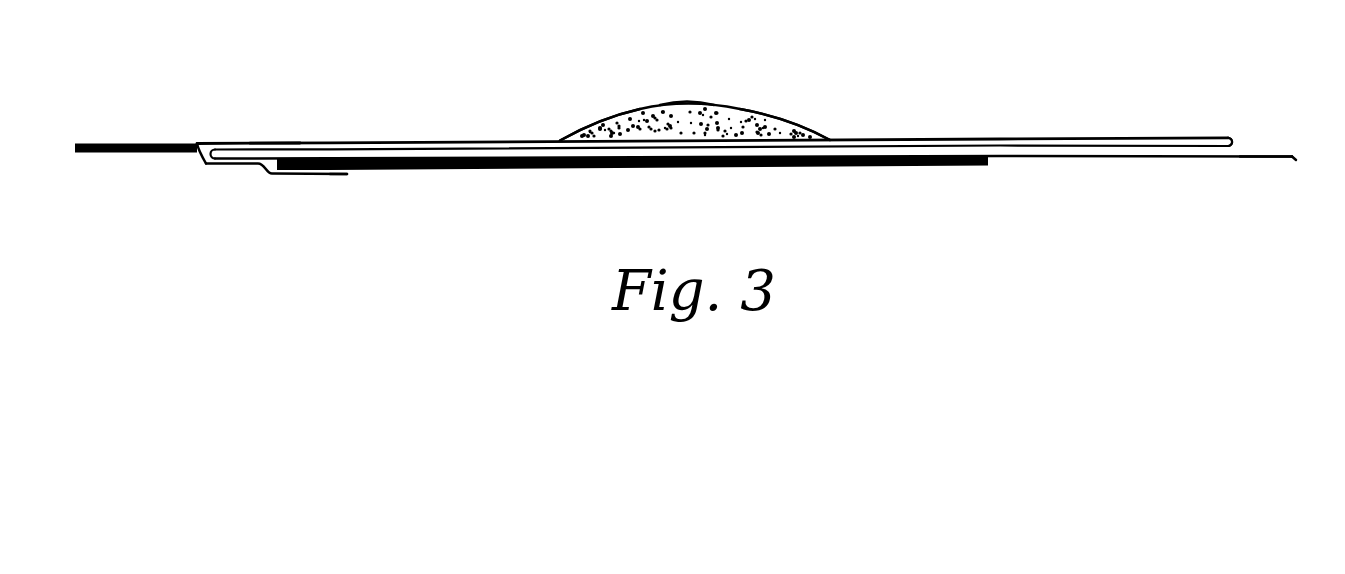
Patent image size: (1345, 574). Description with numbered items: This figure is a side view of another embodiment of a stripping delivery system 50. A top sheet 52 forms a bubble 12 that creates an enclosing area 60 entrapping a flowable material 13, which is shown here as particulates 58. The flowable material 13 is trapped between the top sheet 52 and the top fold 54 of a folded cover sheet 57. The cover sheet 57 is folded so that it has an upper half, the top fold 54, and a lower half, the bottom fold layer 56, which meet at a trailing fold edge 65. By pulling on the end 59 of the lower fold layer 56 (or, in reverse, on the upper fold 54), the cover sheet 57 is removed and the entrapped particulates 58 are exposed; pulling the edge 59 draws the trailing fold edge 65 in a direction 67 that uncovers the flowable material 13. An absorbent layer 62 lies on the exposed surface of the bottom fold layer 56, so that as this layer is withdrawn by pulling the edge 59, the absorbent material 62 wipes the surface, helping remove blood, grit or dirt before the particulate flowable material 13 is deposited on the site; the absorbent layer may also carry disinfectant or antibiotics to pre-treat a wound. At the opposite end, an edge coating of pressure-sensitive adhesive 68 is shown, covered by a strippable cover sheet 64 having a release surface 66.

The bubble 12 is at (800, 92).
The flowable material 13 is at (670, 117).
The delivery system 50 is at (413, 212).
The top sheet 52 is at (949, 138).
The top fold 54 is at (1227, 150).
The lower fold layer 56 is at (1266, 167).
The folded cover sheet 57 is at (1262, 155).
The particulates 58 is at (710, 123).
The end 59 is at (1294, 158).
The enclosing area 60 is at (643, 135).
The absorbent layer 62 is at (538, 170).
The strippable cover sheet 64 is at (233, 175).
The trailing fold edge 65 is at (202, 142).
The release surface 66 is at (345, 171).
The direction 67 is at (318, 100).
The pressure-sensitive adhesive 68 is at (75, 148).